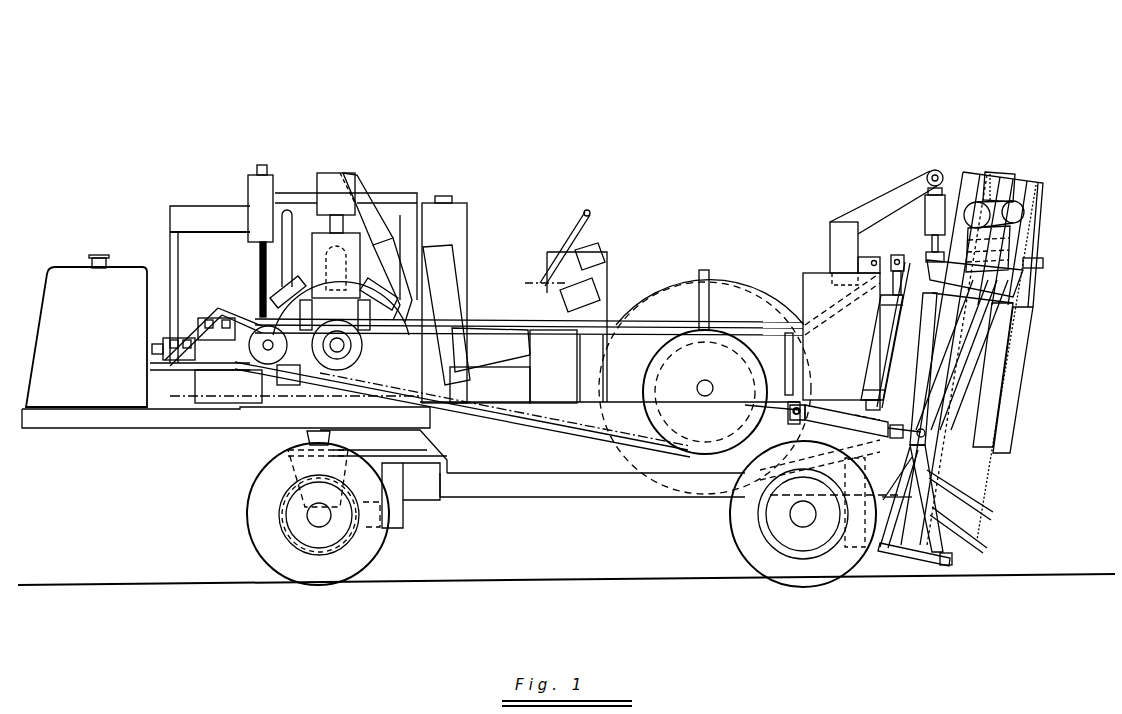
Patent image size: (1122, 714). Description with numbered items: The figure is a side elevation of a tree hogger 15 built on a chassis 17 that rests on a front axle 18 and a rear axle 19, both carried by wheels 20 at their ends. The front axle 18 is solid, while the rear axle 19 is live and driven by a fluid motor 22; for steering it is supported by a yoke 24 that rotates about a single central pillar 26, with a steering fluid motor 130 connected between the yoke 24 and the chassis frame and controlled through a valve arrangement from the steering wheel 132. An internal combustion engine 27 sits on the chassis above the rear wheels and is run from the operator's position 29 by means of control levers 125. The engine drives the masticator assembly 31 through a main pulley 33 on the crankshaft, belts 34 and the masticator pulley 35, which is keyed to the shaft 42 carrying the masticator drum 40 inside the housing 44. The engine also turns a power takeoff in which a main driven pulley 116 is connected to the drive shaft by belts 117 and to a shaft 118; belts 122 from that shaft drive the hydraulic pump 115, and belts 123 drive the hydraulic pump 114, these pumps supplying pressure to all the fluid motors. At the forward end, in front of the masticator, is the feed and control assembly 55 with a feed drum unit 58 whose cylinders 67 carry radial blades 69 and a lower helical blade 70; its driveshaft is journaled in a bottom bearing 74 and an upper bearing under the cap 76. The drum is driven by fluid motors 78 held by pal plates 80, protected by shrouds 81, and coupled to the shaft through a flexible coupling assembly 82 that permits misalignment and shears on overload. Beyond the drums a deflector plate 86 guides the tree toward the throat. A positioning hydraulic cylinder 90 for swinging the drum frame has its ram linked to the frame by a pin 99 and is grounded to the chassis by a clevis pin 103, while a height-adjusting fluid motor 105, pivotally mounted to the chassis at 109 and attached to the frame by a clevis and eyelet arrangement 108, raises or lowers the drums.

The tree hogger 15 is at (708, 150).
The chassis 17 is at (565, 492).
The front axle 18 is at (761, 544).
The rear axle 19 is at (316, 516).
The wheels 20 is at (374, 555).
The fluid motor 22 is at (436, 495).
The yoke 24 is at (288, 472).
The pillar 26 is at (305, 441).
The internal combustion engine 27 is at (396, 290).
The operator's position 29 is at (532, 252).
The masticator assembly 31 is at (760, 253).
The main pulley 33 is at (362, 345).
The belts 34 is at (560, 332).
The masticator pulley 35 is at (655, 422).
The masticator drum 40 is at (665, 284).
The shaft 42 is at (702, 388).
The housing 44 is at (761, 296).
The feed and control assembly 55 is at (993, 135).
The feed drum unit 58 is at (1014, 479).
The cylinders 67 is at (943, 461).
The blades 69 is at (1010, 395).
The helical blade 70 is at (982, 487).
The bearing 74 is at (954, 559).
The bearing cap 76 is at (1013, 292).
The fluid motors 78 is at (1006, 175).
The pal plates 80 is at (982, 232).
The shrouds 81 is at (1040, 216).
The flexible coupling assembly 82 is at (1008, 262).
The deflector plate 86 is at (844, 290).
The hydraulic ram 90 is at (832, 413).
The pin 99 is at (930, 433).
The clevis pin 103 is at (788, 408).
The fluid motor 105 is at (882, 344).
The clevis and eyelet arrangement 108 is at (908, 254).
The pivotal mounting 109 is at (868, 398).
The hydraulic pump 114 is at (172, 362).
The hydraulic pump 115 is at (200, 368).
The main driven pulley 116 is at (238, 368).
The belts 117 is at (289, 386).
The shaft 118 is at (268, 366).
The belts 122 is at (240, 318).
The belts 123 is at (178, 322).
The control levers 125 is at (600, 252).
The fluid motor 130 is at (420, 446).
The steering wheel 132 is at (575, 212).